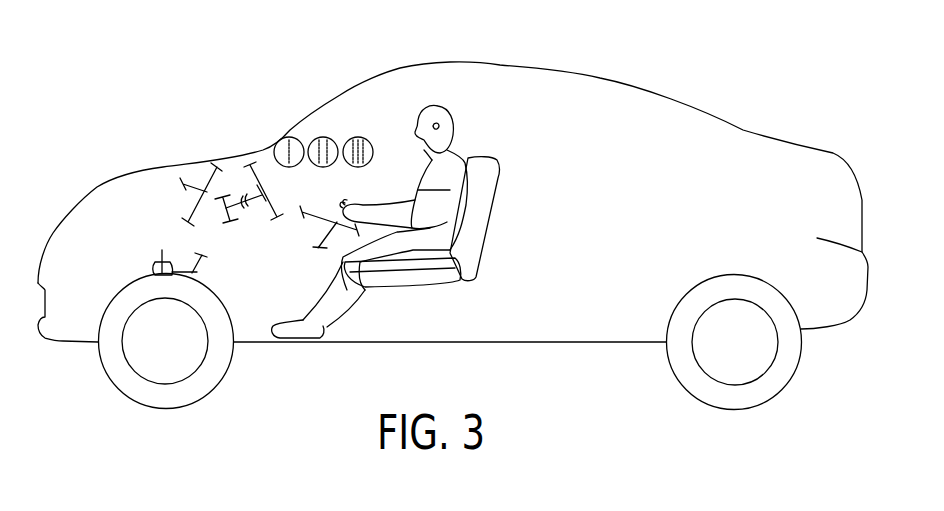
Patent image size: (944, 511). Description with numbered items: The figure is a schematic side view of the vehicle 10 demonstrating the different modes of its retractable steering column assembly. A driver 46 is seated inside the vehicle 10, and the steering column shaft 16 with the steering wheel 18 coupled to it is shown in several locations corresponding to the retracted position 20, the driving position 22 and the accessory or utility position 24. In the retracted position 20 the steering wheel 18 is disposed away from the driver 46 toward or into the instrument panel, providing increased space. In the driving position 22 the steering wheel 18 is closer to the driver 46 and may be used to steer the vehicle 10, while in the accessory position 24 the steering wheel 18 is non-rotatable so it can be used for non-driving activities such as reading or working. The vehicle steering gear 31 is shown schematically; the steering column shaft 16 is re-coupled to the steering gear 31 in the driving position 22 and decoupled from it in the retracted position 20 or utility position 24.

The vehicle 10 is at (603, 77).
The steering column shaft 16 is at (237, 207).
The steering wheel 18 is at (197, 200).
The retracted position 20 is at (289, 117).
The driving position 22 is at (324, 117).
The accessory position 24 is at (359, 117).
The vehicle steering gear 31 is at (190, 273).
The driver 46 is at (455, 135).